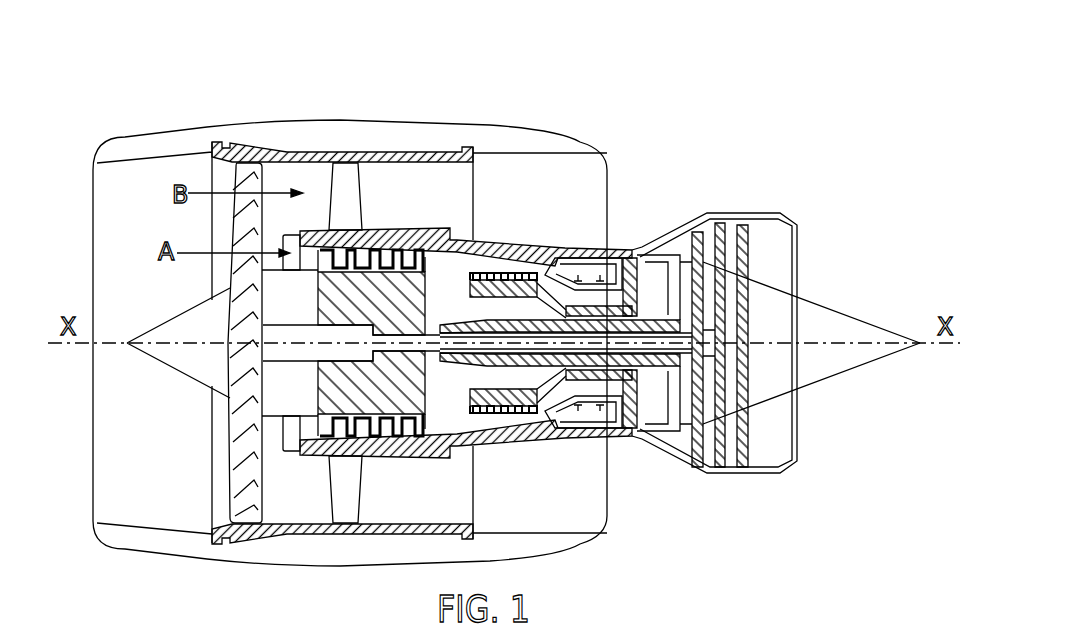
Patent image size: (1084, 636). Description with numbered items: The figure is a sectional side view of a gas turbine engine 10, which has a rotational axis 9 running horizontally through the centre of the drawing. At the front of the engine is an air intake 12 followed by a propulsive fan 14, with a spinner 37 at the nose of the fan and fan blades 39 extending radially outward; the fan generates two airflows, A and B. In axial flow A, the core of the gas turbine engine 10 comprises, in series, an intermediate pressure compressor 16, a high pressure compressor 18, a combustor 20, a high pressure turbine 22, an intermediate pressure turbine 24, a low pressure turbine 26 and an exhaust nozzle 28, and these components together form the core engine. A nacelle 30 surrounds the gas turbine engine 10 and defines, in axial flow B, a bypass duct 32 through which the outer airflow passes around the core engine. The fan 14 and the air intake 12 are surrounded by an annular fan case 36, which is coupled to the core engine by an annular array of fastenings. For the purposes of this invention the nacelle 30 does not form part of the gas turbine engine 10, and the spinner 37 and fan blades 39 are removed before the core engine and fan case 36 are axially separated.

The rotational axis 9 is at (946, 345).
The gas turbine engine 10 is at (140, 80).
The air intake 12 is at (93, 252).
The propulsive fan 14 is at (235, 190).
The intermediate pressure compressor 16 is at (372, 245).
The high pressure compressor 18 is at (500, 275).
The combustor 20 is at (573, 275).
The high pressure turbine 22 is at (628, 258).
The intermediate pressure turbine 24 is at (670, 245).
The low pressure turbine 26 is at (742, 240).
The exhaust nozzle 28 is at (799, 272).
The nacelle 30 is at (405, 149).
The bypass duct 32 is at (460, 199).
The fan case 36 is at (272, 150).
The spinner 37 is at (197, 360).
The fan blades 39 is at (243, 482).